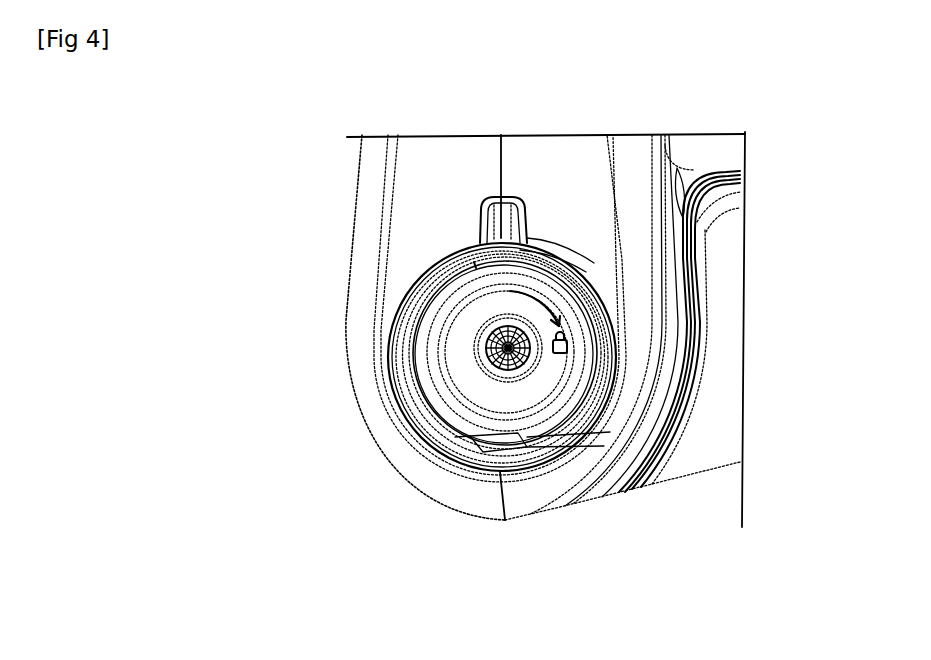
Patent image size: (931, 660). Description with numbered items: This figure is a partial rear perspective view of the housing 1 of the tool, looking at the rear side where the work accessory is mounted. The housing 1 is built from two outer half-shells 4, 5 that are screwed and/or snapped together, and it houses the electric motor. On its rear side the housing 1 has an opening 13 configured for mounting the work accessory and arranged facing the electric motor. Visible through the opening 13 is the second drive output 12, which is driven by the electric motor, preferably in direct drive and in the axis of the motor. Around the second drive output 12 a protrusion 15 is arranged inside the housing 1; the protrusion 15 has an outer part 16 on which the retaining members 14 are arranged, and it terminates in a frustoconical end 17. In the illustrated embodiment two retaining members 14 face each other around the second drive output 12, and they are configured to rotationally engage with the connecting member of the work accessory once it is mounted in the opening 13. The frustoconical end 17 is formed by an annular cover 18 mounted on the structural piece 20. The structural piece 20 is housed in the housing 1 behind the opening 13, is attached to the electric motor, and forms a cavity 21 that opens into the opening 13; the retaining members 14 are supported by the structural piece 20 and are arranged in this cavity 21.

The housing 1 is at (308, 523).
The outer half-shell 4 is at (580, 470).
The outer half-shell 5 is at (362, 378).
The second drive output 12 is at (485, 330).
The opening 13 is at (423, 438).
The retaining members 14 is at (562, 256).
The protrusion 15 is at (455, 345).
The outer part 16 is at (465, 265).
The frustoconical end 17 is at (598, 328).
The annular cover 18 is at (498, 408).
The structural piece 20 is at (490, 227).
The cavity 21 is at (405, 355).